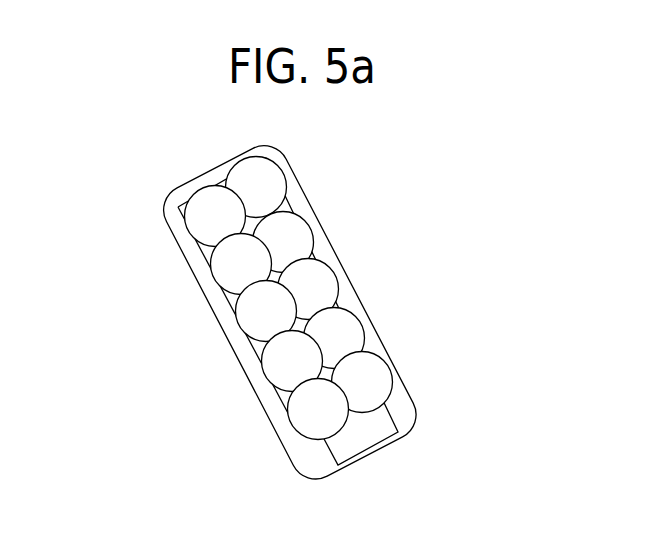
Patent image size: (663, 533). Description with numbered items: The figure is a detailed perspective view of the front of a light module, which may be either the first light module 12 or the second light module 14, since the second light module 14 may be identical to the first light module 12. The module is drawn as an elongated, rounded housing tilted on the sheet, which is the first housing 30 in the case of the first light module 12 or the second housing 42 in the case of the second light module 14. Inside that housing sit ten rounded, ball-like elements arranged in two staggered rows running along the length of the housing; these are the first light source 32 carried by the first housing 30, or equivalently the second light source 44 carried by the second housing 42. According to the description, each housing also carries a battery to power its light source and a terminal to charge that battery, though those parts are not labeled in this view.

The first light module 12 is at (330, 312).
The second light module 14 is at (330, 312).
The first housing 30 is at (351, 312).
The second housing 42 is at (344, 273).
The first light source 32 is at (330, 298).
The second light source 44 is at (325, 292).